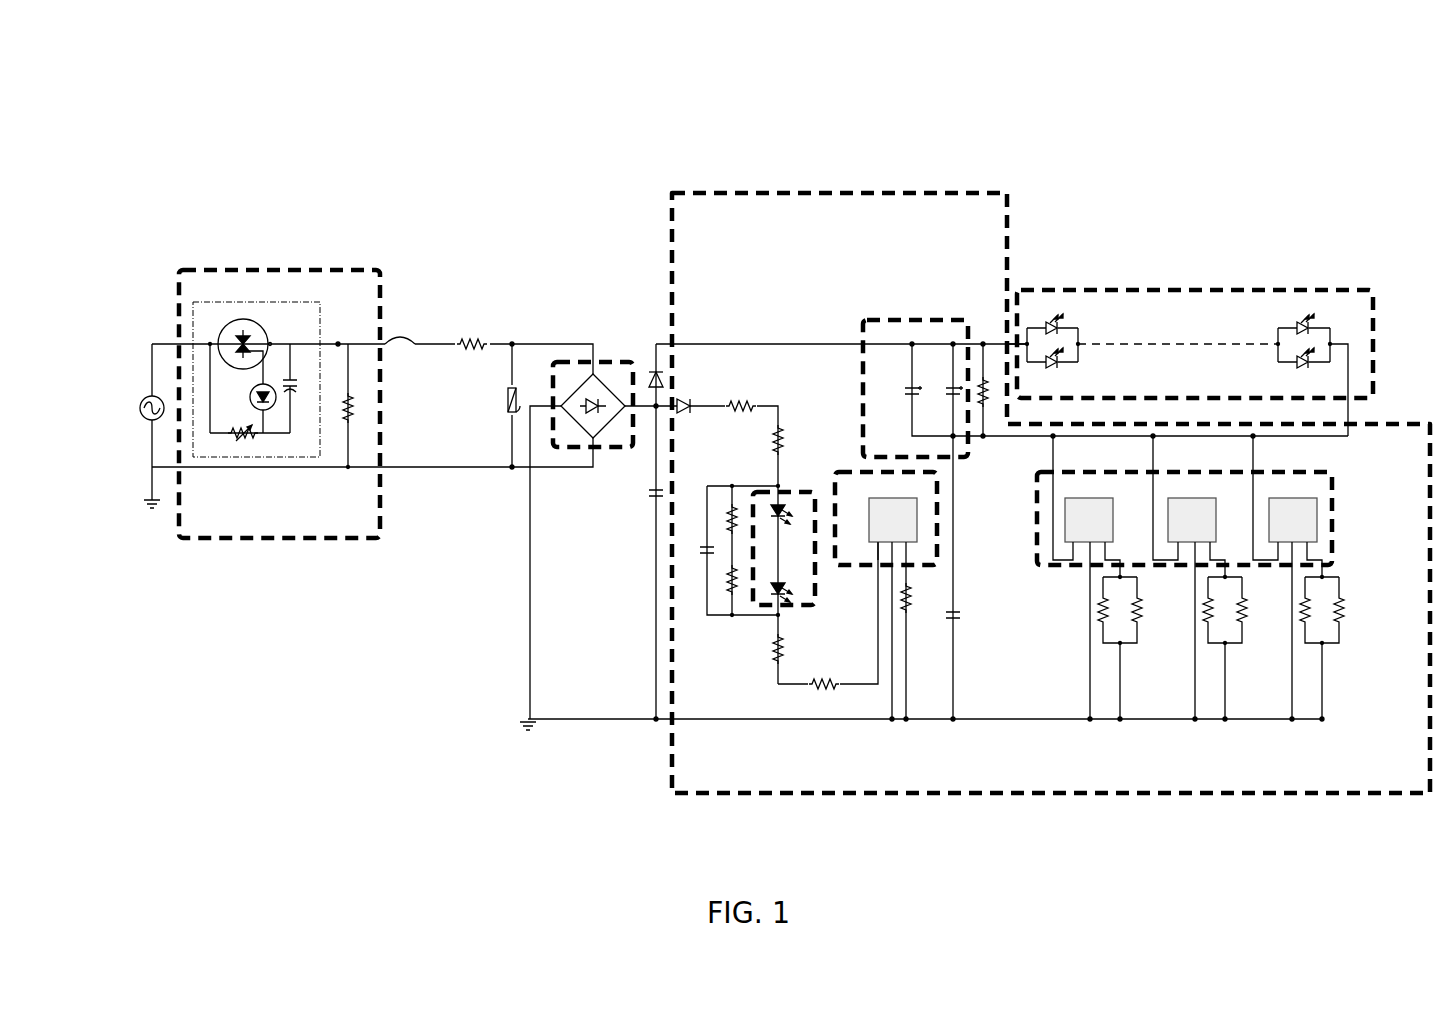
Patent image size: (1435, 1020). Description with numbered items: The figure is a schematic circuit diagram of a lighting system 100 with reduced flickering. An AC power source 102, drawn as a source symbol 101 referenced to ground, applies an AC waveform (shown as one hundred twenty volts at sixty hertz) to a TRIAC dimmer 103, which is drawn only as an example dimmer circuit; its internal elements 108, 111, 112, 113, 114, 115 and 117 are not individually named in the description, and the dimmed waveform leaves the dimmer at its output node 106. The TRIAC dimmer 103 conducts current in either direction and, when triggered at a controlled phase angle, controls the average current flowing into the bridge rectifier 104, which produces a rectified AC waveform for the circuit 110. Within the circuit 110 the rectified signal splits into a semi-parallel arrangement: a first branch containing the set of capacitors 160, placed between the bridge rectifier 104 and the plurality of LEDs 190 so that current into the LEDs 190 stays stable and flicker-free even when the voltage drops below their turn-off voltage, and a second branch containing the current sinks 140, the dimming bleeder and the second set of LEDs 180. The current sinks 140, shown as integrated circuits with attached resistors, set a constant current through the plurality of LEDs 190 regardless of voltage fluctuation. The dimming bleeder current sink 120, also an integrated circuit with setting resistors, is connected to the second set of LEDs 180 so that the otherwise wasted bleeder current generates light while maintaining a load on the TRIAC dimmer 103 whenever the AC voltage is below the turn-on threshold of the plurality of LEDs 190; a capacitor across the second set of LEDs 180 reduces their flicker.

The lighting system 100 is at (381, 70).
The AC power source 101 is at (154, 426).
The AC power source 102 is at (142, 410).
The TRIAC dimmer 103 is at (284, 270).
The bridge rectifier 104 is at (621, 362).
The dimmer output node 106 is at (340, 339).
The dimmer switching circuit 108 is at (256, 379).
The circuit 110 is at (806, 193).
The triac output terminal 111 is at (277, 340).
The triac input terminal 112 is at (206, 383).
The triac 113 is at (249, 338).
The variable resistor 114 is at (250, 439).
The diac 115 is at (265, 396).
The timing capacitor 117 is at (295, 388).
The dimming bleeder current sink 120 is at (848, 472).
The current sinks 140 is at (1293, 473).
The capacitors 160 is at (915, 320).
The second set of LEDs 180 is at (773, 606).
The plurality of LEDs 190 is at (1190, 290).